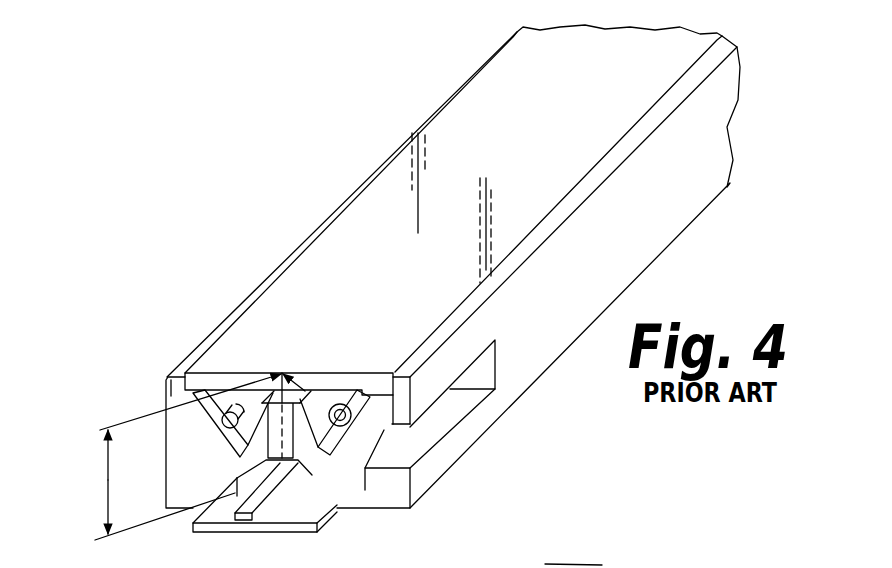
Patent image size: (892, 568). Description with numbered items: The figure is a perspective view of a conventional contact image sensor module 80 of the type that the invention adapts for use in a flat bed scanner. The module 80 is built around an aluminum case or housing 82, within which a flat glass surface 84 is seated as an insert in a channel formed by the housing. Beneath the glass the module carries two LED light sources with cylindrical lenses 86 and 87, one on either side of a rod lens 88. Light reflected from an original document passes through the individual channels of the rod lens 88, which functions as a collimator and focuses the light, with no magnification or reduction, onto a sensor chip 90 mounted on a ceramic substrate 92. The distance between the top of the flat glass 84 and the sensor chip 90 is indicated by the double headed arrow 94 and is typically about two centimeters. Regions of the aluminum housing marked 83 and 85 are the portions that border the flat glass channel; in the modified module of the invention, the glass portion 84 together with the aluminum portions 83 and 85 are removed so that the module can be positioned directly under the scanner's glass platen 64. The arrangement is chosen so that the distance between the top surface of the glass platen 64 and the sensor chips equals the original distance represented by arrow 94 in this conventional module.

The conventional CIS module 80 is at (226, 195).
The aluminum case or housing 82 is at (622, 225).
The aluminum portion of housing 83 is at (386, 404).
The flat glass surface 84 is at (495, 117).
The aluminum portion of housing 85 is at (172, 397).
The LED light source with cylindrical lens 86 is at (250, 388).
The LED light source with cylindrical lens 87 is at (333, 388).
The rod lens 88 is at (298, 402).
The sensor chip 90 is at (290, 477).
The ceramic substrate 92 is at (318, 504).
The double headed arrow 94 is at (108, 480).
The glass platen 64 is at (602, 565).